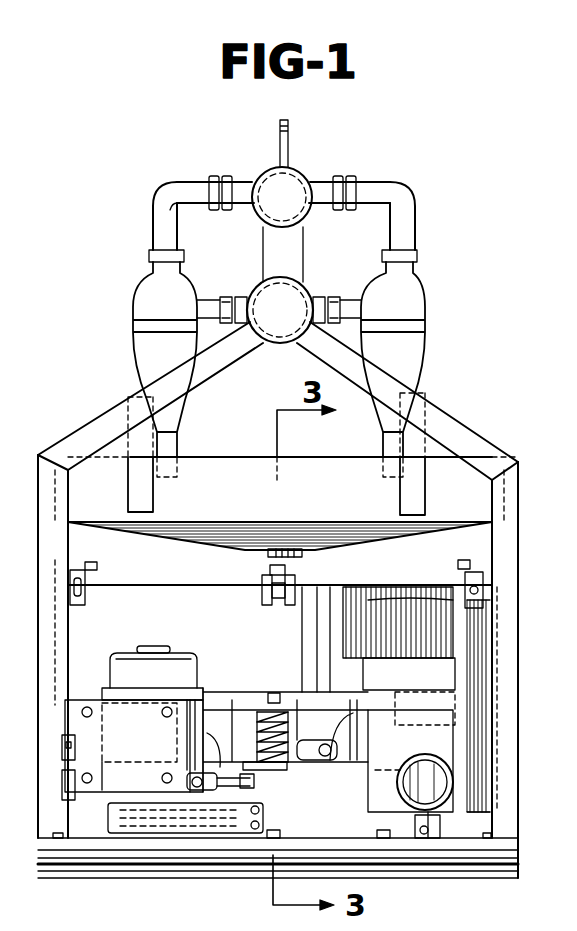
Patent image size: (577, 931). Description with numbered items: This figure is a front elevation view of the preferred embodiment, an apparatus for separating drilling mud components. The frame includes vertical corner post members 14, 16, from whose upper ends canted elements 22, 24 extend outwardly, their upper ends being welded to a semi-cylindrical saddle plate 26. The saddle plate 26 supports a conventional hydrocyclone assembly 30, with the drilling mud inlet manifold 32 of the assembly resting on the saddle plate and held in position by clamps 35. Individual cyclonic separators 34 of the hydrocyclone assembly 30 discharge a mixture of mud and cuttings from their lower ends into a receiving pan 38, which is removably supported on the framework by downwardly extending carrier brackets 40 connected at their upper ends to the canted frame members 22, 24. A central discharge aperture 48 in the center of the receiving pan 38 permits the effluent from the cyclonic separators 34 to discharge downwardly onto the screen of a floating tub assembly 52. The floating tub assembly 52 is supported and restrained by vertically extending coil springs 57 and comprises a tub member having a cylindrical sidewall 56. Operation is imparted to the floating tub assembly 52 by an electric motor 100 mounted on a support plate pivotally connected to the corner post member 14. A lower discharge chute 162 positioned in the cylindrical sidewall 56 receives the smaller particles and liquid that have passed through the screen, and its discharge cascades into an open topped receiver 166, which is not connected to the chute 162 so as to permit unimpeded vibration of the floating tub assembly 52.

The hydrocyclone assembly 30 is at (110, 300).
The drilling mud inlet manifold 32 is at (276, 283).
The clamps 35 is at (237, 298).
The cyclonic separators 34 is at (138, 354).
The saddle plate 26 is at (278, 346).
The canted element 22 is at (100, 413).
The canted element 24 is at (473, 437).
The vertical corner post member 14 is at (55, 548).
The vertical corner post member 16 is at (512, 562).
The carrier brackets 40 is at (148, 495).
The receiving pan 38 is at (280, 519).
The central discharge aperture 48 is at (303, 553).
The floating tub assembly 52 is at (187, 566).
The cylindrical sidewall 56 is at (329, 689).
The electric motor 100 is at (188, 668).
The vertically extending coil springs 57 is at (292, 712).
The lower discharge chute 162 is at (399, 638).
The open topped receiver 166 is at (368, 786).